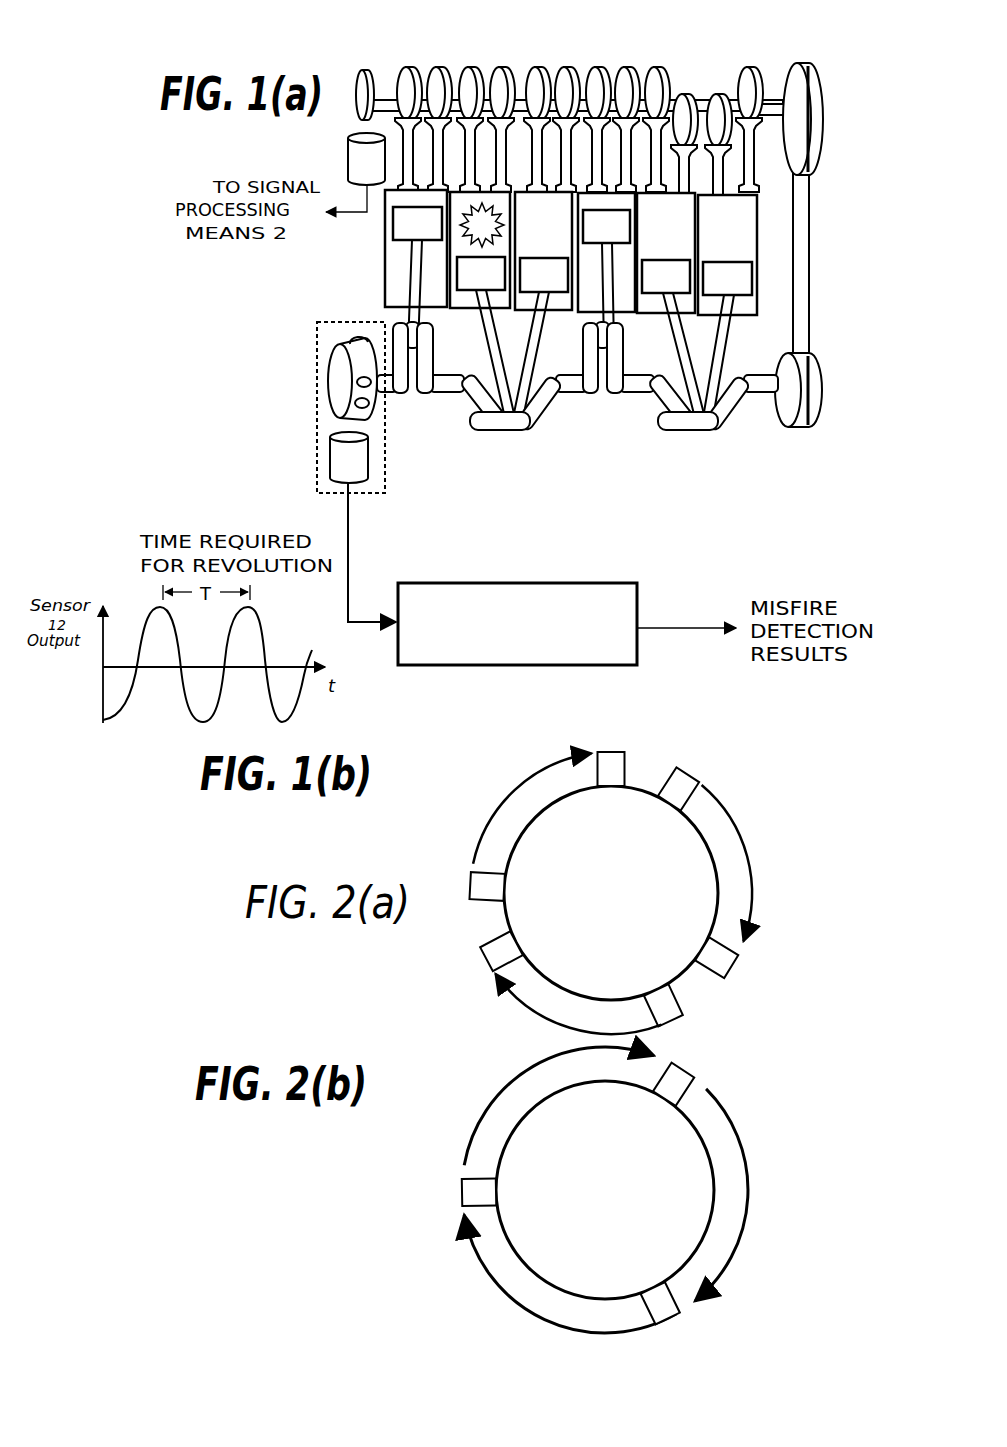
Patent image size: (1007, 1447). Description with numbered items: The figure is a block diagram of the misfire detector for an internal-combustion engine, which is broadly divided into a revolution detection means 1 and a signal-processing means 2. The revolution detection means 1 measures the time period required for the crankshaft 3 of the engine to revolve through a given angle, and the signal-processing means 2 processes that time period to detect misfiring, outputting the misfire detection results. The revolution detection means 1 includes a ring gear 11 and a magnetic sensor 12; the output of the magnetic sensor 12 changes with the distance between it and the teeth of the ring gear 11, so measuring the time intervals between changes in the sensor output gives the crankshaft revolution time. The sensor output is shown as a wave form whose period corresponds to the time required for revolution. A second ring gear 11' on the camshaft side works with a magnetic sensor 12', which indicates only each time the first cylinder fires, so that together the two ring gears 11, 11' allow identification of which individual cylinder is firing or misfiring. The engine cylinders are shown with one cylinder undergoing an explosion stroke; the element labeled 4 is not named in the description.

In FIG. 1A, the revolution detection means 1 is at (331, 407).
In FIG. 1B, the signal-processing means 2 is at (478, 665).
In FIG. 1A, the crankshaft 3 is at (770, 392).
In FIG. 1A, the engine cylinder 4 is at (385, 268).
In FIG. 1A, the ring gear 11 is at (327, 378).
In FIG. 2A, the ring gear 11 is at (588, 893).
In FIG. 2B, the ring gear 11 is at (586, 1190).
In FIG. 1A, the magnetic sensor 12 is at (322, 457).
In FIG. 1A, the second ring gear 11' is at (366, 60).
In FIG. 1A, the magnetic sensor 12' is at (331, 172).